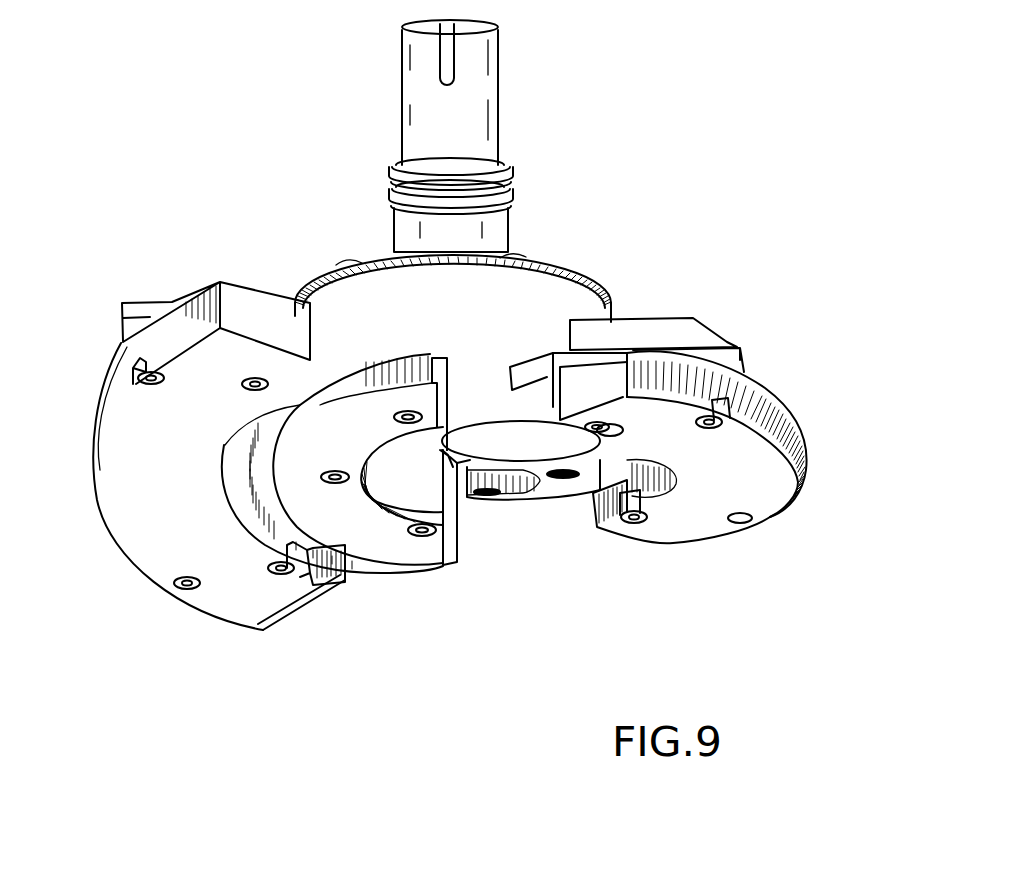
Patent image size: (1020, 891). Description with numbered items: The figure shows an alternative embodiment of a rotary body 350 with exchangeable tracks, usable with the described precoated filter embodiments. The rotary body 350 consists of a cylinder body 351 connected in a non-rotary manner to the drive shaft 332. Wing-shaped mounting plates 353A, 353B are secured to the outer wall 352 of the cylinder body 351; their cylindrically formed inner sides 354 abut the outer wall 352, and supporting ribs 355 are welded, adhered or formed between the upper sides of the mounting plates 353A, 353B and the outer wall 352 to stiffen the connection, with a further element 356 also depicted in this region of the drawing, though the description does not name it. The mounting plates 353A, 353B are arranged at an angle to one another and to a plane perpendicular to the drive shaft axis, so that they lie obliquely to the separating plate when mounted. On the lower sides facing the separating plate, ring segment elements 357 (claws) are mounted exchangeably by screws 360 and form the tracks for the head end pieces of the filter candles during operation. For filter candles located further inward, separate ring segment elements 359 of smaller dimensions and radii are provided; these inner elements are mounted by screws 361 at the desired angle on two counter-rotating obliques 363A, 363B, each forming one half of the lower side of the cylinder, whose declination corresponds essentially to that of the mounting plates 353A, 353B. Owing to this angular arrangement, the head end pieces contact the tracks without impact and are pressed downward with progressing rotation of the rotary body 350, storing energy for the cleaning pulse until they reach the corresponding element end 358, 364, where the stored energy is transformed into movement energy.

The drive shaft 332 is at (484, 104).
The rotary body 350 is at (702, 192).
The cylinder body 351 is at (347, 283).
The outer wall 352 is at (543, 290).
The mounting plate 353A is at (138, 310).
The mounting plate 353B is at (740, 357).
The inner side 354 is at (520, 400).
The supporting rib 355 is at (680, 327).
The third radial bar 356 is at (540, 350).
The ring segment element 357 is at (777, 487).
The element end 358 is at (345, 575).
The ring segment element 359 is at (403, 560).
The screw 360 is at (135, 374).
The screw 361 is at (337, 470).
The oblique 363A is at (423, 473).
The oblique 363B is at (475, 427).
The element end 364 is at (453, 547).